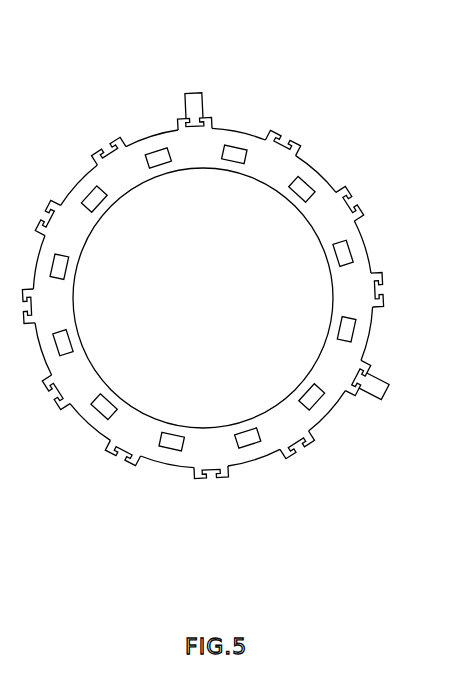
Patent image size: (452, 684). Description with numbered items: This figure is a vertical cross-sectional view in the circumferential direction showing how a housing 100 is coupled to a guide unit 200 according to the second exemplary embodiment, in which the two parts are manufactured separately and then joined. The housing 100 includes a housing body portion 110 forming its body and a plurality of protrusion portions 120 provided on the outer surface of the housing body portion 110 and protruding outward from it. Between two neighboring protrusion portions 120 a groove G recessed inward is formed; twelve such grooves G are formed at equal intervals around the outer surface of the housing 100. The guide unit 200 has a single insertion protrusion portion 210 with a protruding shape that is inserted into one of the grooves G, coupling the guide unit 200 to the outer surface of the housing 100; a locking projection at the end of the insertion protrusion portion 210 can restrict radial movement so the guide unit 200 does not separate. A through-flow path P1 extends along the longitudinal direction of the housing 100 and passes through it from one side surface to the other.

The housing 100 is at (219, 251).
The housing body portion 110 is at (62, 302).
The protrusion portion 120 is at (273, 134).
The guide unit 200 is at (197, 93).
The insertion protrusion portion 210 is at (195, 126).
The groove G is at (353, 202).
The through-flow path P1 is at (100, 413).